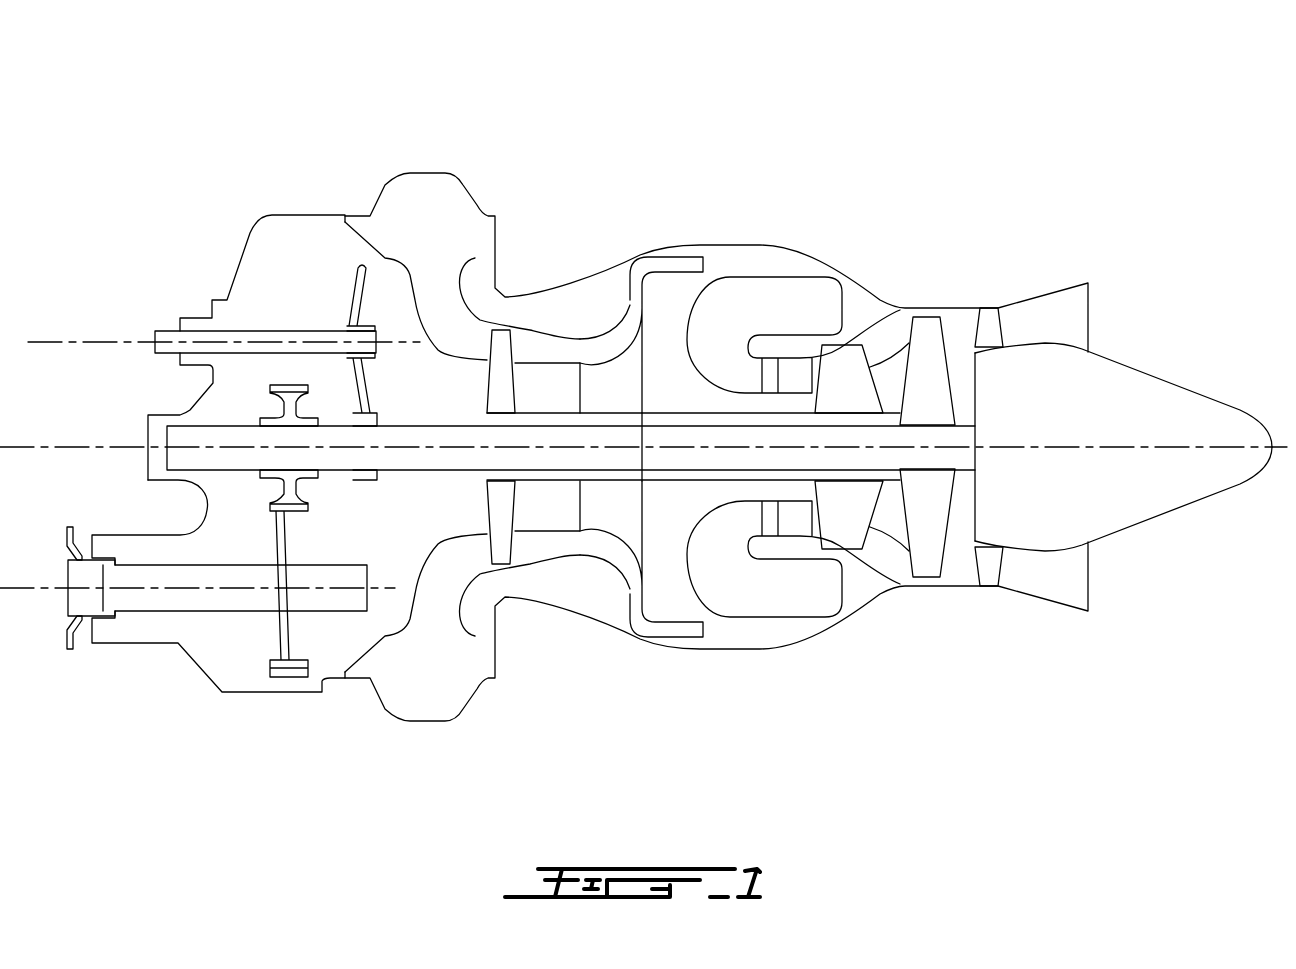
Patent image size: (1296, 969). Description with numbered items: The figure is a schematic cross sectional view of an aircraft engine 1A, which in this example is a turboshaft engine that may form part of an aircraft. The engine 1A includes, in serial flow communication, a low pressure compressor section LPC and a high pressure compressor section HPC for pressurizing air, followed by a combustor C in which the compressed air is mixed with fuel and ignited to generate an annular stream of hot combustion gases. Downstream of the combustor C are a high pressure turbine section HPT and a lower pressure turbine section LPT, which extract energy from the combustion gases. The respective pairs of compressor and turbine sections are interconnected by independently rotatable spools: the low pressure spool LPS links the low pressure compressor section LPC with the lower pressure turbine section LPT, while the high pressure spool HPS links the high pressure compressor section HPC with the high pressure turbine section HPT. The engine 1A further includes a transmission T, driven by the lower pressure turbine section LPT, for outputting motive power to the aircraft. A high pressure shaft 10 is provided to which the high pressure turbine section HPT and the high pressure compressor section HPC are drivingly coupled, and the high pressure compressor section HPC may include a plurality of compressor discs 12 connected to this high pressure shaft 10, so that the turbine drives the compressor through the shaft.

The aircraft engine 1A is at (1140, 148).
The low pressure compressor section LPC is at (517, 245).
The high pressure compressor section HPC is at (625, 233).
The high pressure turbine section HPT is at (868, 255).
The lower pressure turbine section LPT is at (950, 292).
The combustor C is at (748, 648).
The low pressure spool LPS is at (423, 472).
The high pressure spool HPS is at (548, 478).
The transmission T is at (152, 630).
The high pressure shaft 10 is at (602, 495).
The compressor discs 12 is at (629, 503).